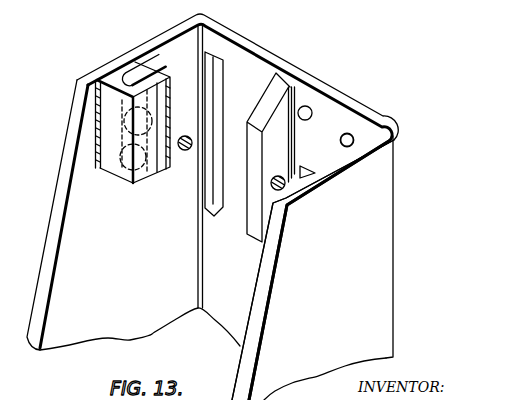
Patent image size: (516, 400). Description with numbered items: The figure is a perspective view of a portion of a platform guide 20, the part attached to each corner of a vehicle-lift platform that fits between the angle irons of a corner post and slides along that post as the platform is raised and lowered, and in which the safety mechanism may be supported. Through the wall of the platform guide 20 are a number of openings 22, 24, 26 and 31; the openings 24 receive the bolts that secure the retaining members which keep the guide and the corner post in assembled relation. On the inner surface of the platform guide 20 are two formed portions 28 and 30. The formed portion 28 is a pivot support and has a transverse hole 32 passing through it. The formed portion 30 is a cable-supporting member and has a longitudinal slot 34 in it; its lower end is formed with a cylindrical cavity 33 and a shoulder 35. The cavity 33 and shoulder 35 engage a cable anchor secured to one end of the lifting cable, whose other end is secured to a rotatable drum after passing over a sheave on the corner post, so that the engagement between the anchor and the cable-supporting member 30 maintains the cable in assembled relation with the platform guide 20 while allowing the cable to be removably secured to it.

The platform guide 20 is at (361, 241).
The opening 22 is at (219, 75).
The openings 24 is at (310, 106).
The opening 26 is at (313, 172).
The formed portion 28 is at (273, 93).
The cable-supporting member 30 is at (115, 81).
The opening 31 is at (181, 134).
The transverse hole 32 is at (293, 192).
The cylindrical cavity 33 is at (128, 165).
The longitudinal slot 34 is at (138, 80).
The shoulder 35 is at (124, 119).